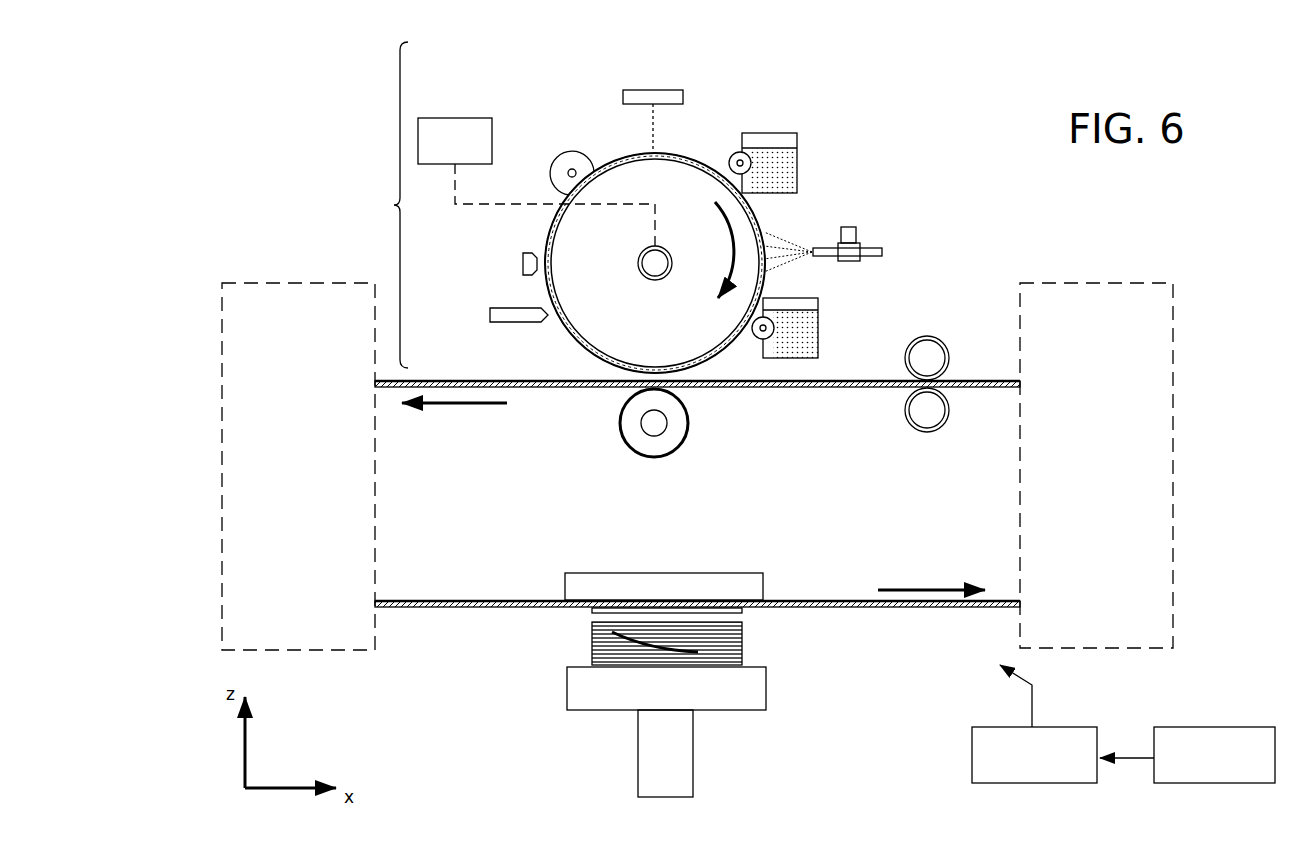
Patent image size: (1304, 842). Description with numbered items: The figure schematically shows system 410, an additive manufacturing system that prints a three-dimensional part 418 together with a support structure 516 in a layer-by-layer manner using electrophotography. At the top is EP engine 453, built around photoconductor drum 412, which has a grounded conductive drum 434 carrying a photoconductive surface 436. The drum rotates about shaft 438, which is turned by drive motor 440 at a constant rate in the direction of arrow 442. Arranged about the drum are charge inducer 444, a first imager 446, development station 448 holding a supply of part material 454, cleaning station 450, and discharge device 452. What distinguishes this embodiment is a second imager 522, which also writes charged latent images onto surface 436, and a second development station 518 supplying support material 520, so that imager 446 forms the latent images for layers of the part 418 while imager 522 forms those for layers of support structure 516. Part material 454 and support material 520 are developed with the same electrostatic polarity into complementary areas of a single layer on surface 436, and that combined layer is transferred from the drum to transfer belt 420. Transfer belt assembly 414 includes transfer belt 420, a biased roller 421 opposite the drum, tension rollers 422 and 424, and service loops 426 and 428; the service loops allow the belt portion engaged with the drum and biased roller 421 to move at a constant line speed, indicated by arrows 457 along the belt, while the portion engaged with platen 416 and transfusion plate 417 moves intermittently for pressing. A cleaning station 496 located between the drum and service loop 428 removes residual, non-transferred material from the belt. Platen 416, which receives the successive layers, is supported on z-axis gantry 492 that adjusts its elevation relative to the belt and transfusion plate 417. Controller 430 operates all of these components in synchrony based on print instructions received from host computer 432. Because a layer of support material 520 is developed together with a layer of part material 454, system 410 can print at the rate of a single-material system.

The system 410 is at (272, 79).
The photoconductor drum 412 is at (758, 78).
The transfer belt assembly 414 is at (1218, 566).
The platen 416 is at (567, 686).
The transfusion plate 417 is at (763, 586).
The 3D part 418 is at (742, 630).
The transfer belt 420 is at (762, 396).
The biased roller 421 is at (680, 420).
The tension roller 422 is at (298, 466).
The tension roller 424 is at (1096, 465).
The service loop 426 is at (298, 466).
The service loop 428 is at (1096, 465).
The controller 430 is at (972, 746).
The host computer 432 is at (1200, 727).
The conductive drum 434 is at (670, 334).
The photoconductive surface 436 is at (690, 148).
The shaft 438 is at (644, 272).
The drive motor 440 is at (448, 118).
The arrow 442 is at (711, 250).
The charge inducer 444 is at (582, 152).
The imager 446 is at (623, 97).
The development station 448 is at (812, 122).
The cleaning station 450 is at (490, 316).
The discharge device 452 is at (522, 257).
The EP engine 453 is at (377, 205).
The part material 454 is at (790, 160).
The web travel direction 457 is at (445, 404).
The z-axis gantry 492 is at (690, 740).
The cleaning station 496 is at (922, 434).
The support structure 516 is at (592, 648).
The second ink supply unit 518 is at (824, 304).
The support material 520 is at (815, 325).
The imager 522 is at (872, 248).